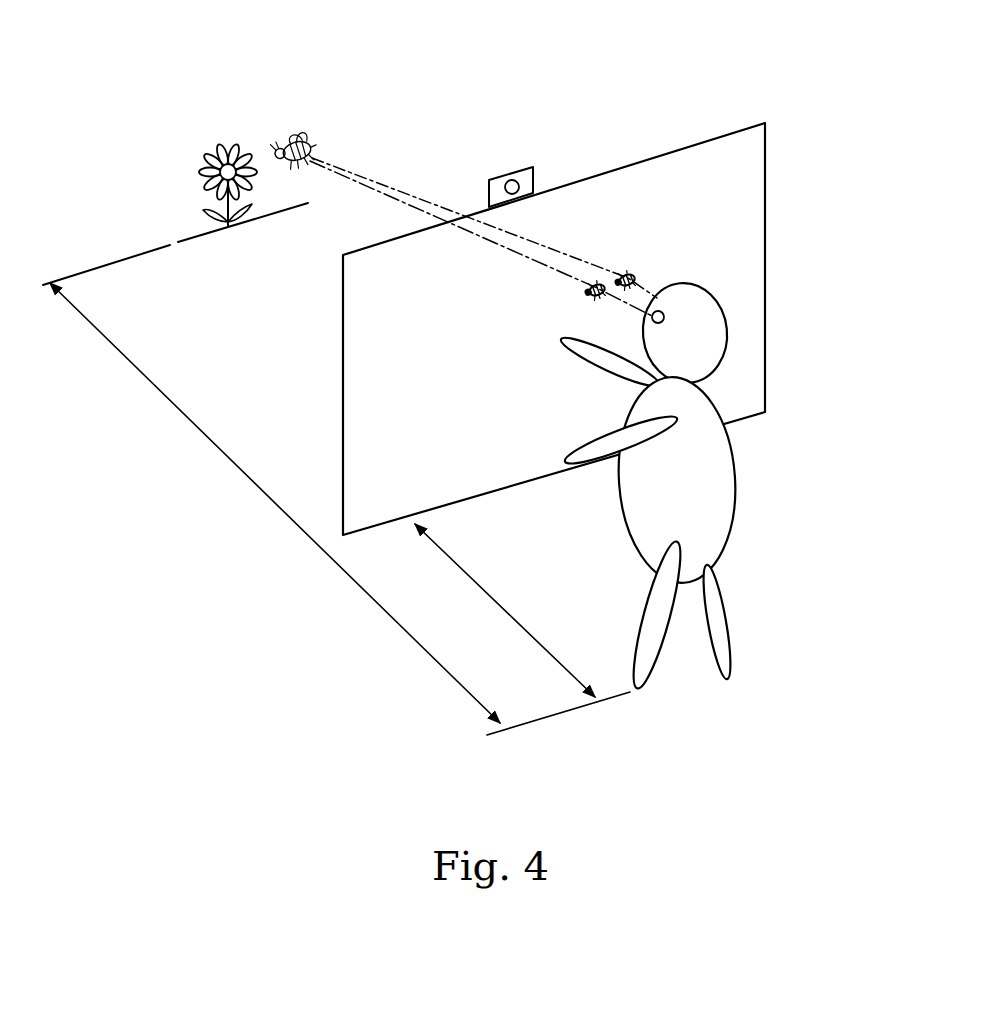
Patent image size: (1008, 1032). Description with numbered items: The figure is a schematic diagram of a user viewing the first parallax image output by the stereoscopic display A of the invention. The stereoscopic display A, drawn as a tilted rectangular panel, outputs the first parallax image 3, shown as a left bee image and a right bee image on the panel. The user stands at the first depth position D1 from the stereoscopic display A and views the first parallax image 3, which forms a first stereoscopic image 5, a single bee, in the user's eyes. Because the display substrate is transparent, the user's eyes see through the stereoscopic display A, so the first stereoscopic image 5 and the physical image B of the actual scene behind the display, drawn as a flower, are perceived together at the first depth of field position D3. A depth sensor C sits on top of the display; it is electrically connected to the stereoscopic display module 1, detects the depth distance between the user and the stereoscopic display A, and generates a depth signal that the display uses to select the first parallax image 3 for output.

The stereoscopic display module 1 is at (728, 132).
The first parallax image 3 is at (588, 290).
The first stereoscopic image 5 is at (305, 138).
The stereoscopic display A is at (795, 260).
The physical image B is at (228, 143).
The depth sensor C is at (523, 167).
The first depth position D1 is at (505, 610).
The first depth of field position D3 is at (340, 509).